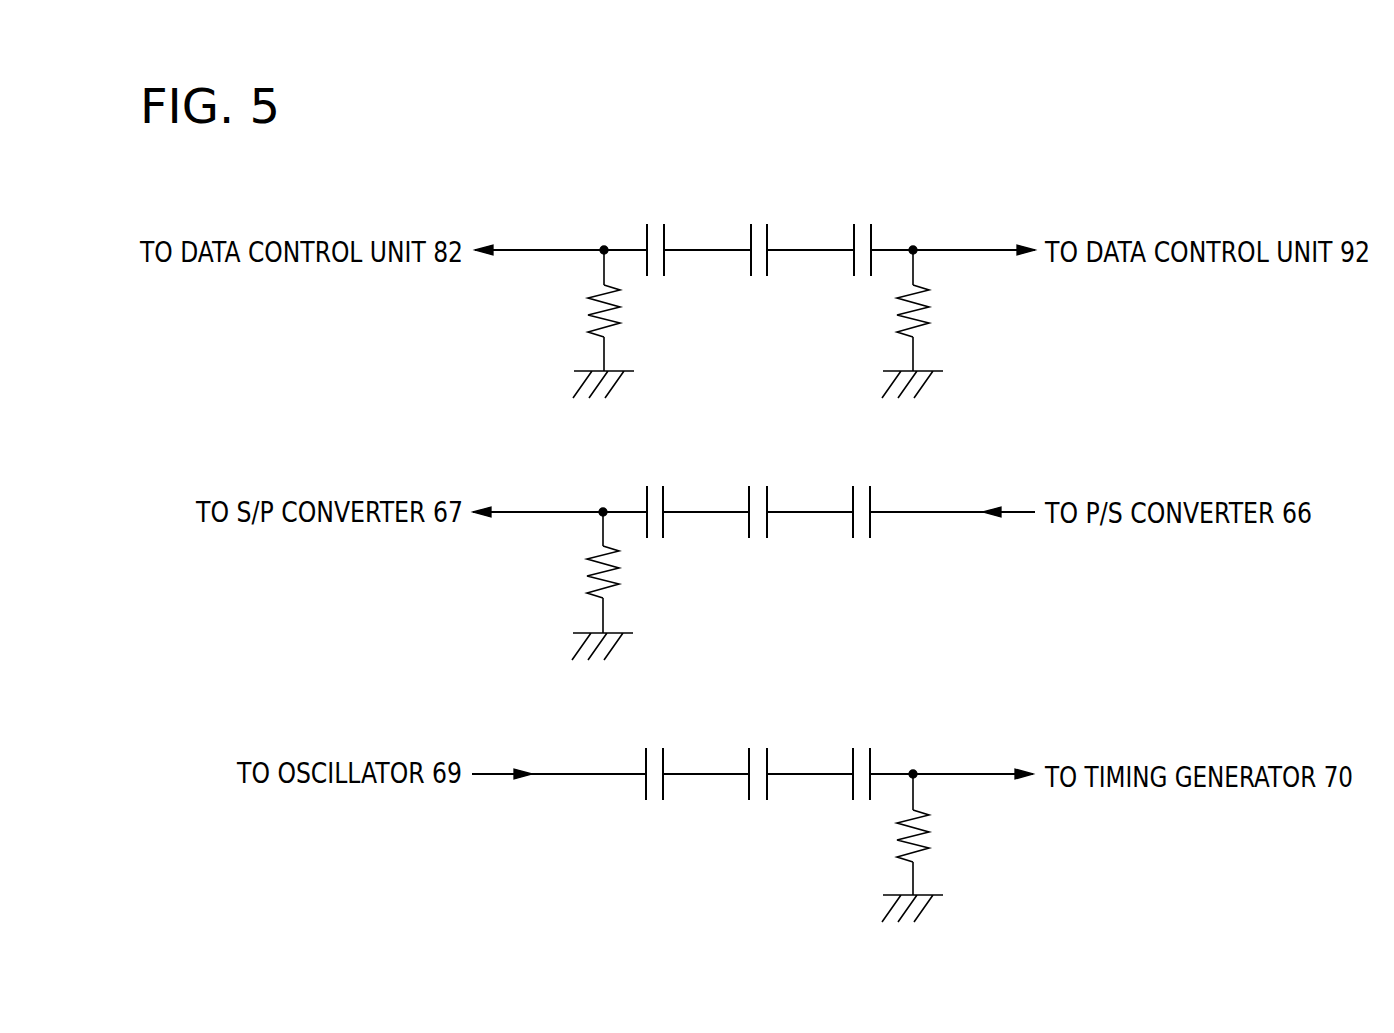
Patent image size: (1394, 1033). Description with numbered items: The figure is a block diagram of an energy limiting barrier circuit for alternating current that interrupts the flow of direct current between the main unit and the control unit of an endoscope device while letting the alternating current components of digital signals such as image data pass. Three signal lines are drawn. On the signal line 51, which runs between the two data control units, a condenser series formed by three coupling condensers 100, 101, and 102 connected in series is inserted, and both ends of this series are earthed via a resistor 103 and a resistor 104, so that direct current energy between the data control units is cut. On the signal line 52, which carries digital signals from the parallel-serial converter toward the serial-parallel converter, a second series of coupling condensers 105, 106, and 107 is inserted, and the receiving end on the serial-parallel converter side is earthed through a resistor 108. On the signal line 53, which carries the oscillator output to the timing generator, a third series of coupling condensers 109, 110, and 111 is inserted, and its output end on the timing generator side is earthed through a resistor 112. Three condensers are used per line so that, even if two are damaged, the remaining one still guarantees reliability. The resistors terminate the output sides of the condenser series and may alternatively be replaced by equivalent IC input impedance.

The signal line 51 is at (530, 260).
The signal line 52 is at (530, 522).
The signal line 53 is at (503, 782).
The coupling condenser 100 is at (645, 232).
The coupling condenser 101 is at (749, 232).
The coupling condenser 102 is at (852, 232).
The resistor 103 is at (621, 316).
The resistor 104 is at (930, 316).
The coupling condenser 105 is at (645, 494).
The coupling condenser 106 is at (748, 494).
The coupling condenser 107 is at (851, 494).
The resistor 108 is at (620, 577).
The coupling condenser 109 is at (644, 756).
The coupling condenser 110 is at (748, 756).
The coupling condenser 111 is at (851, 756).
The resistor 112 is at (930, 842).